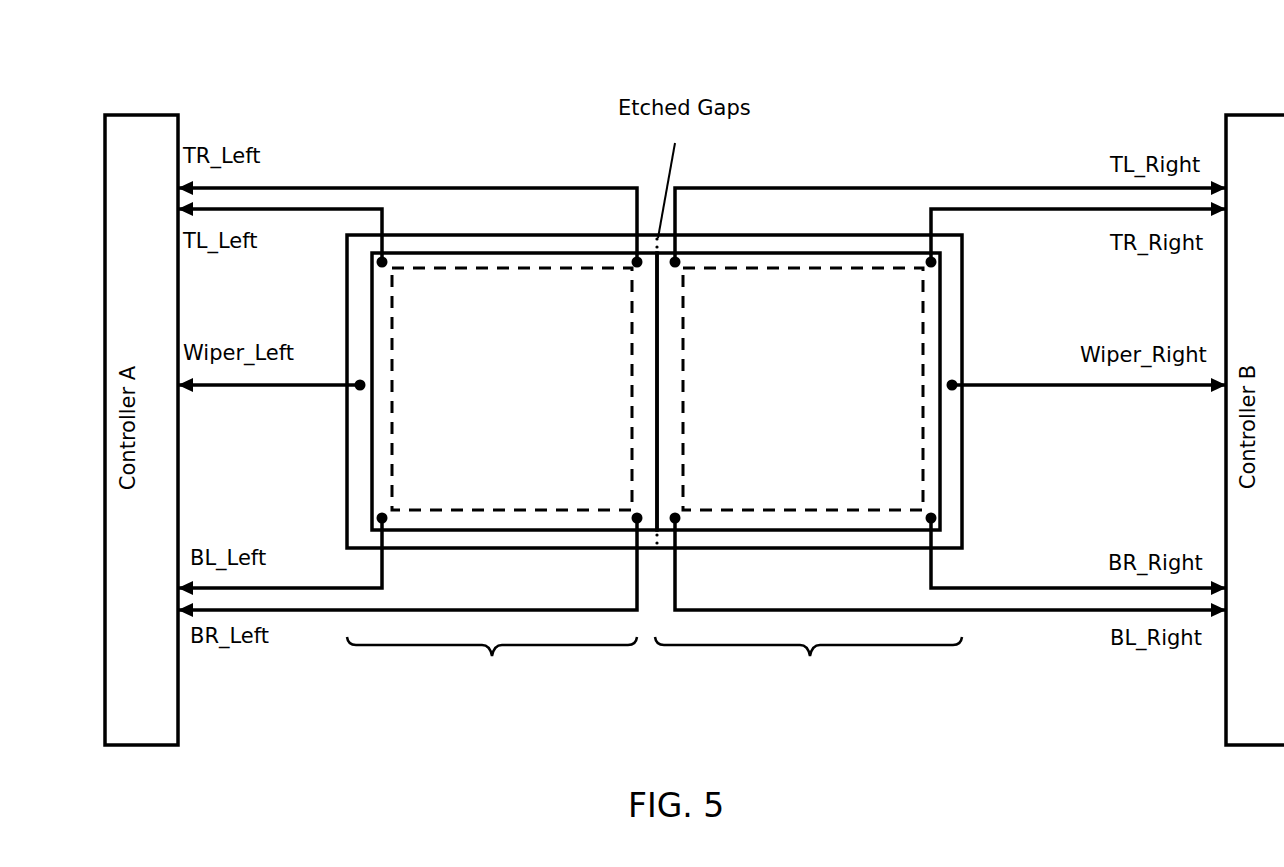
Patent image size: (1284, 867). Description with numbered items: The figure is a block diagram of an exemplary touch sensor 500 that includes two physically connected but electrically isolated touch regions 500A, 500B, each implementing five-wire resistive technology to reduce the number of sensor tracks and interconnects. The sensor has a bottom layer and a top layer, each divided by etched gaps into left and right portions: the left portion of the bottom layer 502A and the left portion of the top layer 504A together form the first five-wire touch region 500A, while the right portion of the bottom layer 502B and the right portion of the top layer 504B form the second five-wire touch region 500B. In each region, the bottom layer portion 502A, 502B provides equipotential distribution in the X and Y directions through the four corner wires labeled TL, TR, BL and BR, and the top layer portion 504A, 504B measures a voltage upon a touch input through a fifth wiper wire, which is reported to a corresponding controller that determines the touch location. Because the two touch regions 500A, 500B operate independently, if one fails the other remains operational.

The touch sensor 500 is at (884, 40).
The first 5-wire touch region 500A is at (492, 668).
The second 5-wire touch region 500B is at (808, 668).
The left portion of the bottom layer 502A is at (548, 252).
The right portion of the bottom layer 502B is at (778, 252).
The left portion of the top layer 504A is at (347, 455).
The right portion of the top layer 504B is at (962, 455).